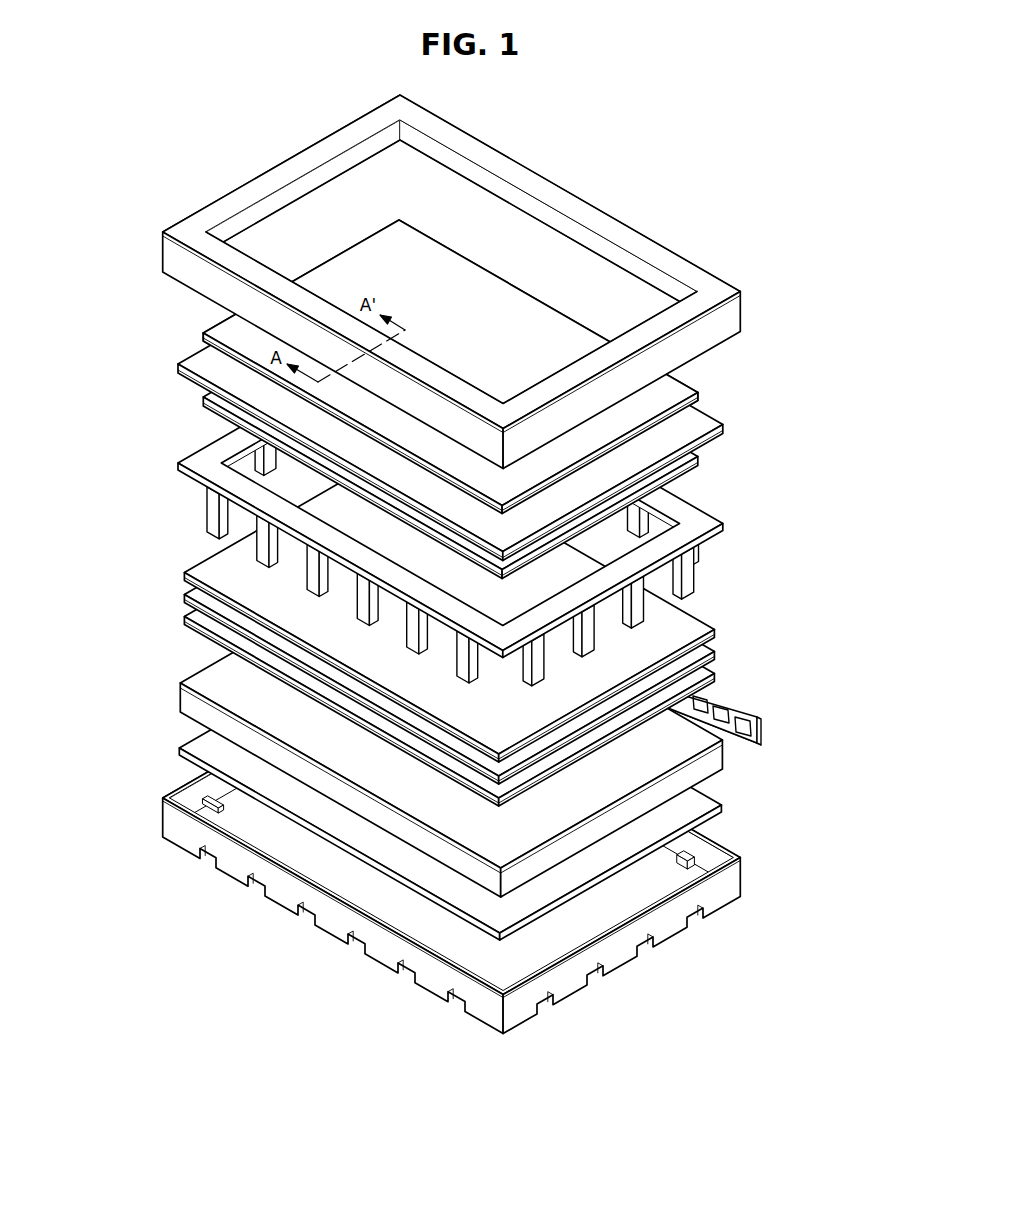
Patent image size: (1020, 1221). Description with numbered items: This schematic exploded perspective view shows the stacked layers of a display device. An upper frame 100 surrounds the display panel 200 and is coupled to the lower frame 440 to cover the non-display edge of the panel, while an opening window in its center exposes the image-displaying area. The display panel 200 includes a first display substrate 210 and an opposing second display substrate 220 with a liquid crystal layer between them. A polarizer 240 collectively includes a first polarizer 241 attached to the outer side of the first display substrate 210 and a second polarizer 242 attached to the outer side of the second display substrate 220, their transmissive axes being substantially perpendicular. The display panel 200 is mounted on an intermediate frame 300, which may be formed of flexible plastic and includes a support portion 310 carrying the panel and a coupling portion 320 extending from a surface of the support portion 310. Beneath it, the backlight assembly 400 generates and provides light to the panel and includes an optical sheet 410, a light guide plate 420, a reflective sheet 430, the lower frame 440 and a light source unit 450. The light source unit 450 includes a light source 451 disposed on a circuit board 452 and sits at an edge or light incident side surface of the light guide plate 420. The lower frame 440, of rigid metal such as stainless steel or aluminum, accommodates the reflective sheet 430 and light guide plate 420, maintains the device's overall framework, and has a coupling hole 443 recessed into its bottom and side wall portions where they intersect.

The upper frame 100 is at (741, 313).
The display panel 200 is at (780, 400).
The first display substrate 210 is at (707, 441).
The second display substrate 220 is at (703, 408).
The polarizer 240 is at (122, 323).
The first polarizer 241 is at (207, 396).
The second polarizer 242 is at (222, 333).
The intermediate frame 300 is at (780, 492).
The support portion 310 is at (683, 505).
The coupling portion 320 is at (687, 567).
The backlight assembly 400 is at (113, 598).
The optical sheet 410 is at (175, 570).
The light guide plate 420 is at (183, 700).
The reflective sheet 430 is at (205, 745).
The lower frame 440 is at (446, 847).
The coupling hole 443 is at (299, 921).
The light source unit 450 is at (832, 705).
The light source 451 is at (737, 747).
The circuit board 452 is at (742, 728).